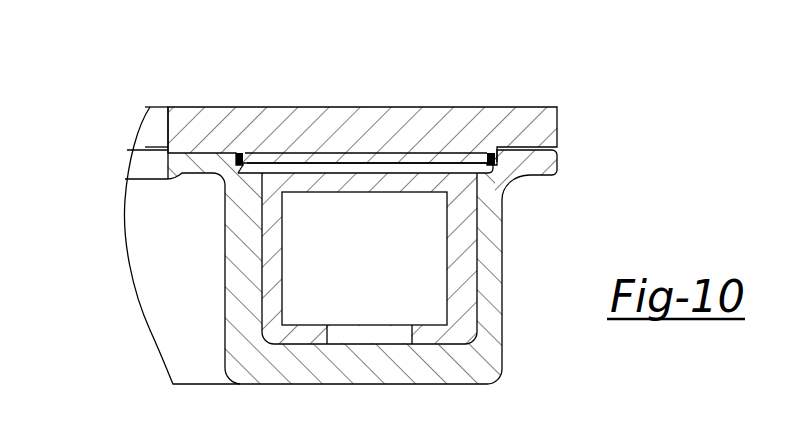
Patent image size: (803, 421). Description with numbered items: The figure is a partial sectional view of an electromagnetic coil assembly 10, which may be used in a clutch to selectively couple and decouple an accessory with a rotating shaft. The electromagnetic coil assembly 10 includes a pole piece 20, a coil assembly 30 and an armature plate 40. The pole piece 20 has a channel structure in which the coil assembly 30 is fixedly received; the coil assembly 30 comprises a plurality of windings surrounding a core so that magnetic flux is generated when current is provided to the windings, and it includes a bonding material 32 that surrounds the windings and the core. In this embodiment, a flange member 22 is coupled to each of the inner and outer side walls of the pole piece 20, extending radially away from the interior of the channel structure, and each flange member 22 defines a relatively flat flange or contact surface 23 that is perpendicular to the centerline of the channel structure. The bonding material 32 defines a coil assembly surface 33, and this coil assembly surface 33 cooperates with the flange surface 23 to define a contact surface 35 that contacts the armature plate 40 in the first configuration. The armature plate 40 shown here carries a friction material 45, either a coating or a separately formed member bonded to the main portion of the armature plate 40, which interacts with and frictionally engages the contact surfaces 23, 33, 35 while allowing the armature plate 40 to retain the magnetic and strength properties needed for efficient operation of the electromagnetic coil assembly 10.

The electromagnetic coil assembly 10 is at (148, 58).
The pole piece 20 is at (477, 354).
The flange member 22 is at (192, 174).
The contact surface 23 is at (242, 148).
The coil assembly 30 is at (371, 310).
The bonding material 32 is at (464, 247).
The coil assembly surface 33 is at (392, 150).
The contact surface 35 is at (363, 166).
The armature plate 40 is at (356, 106).
The friction material 45 is at (305, 158).